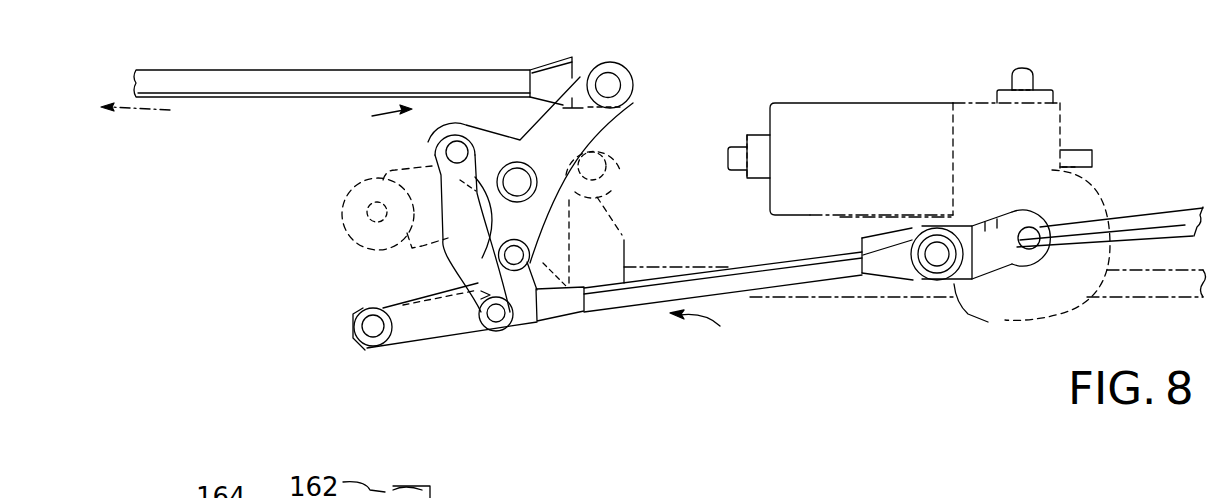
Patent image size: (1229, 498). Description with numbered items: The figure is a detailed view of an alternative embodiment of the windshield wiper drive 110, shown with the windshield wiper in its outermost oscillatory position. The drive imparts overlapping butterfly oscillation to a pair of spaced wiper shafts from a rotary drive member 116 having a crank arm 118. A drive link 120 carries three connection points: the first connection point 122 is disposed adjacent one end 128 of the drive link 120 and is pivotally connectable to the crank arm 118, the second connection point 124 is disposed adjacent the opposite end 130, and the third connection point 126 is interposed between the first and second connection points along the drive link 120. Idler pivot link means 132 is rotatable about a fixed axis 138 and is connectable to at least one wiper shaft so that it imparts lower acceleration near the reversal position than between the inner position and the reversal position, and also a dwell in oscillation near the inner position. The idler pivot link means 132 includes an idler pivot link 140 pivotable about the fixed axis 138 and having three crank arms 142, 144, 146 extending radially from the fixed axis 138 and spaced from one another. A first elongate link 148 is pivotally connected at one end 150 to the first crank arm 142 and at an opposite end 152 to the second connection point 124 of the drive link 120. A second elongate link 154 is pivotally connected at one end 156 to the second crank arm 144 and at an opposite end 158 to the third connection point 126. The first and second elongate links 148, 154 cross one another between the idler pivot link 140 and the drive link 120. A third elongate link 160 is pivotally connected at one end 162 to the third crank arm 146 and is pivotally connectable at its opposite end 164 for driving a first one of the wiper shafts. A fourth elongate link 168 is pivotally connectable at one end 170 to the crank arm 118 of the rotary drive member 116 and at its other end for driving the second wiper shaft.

The windshield wiper drive 110 is at (703, 338).
The rotary drive member 116 is at (897, 98).
The crank arm 118 is at (1022, 270).
The drive link 120 is at (738, 287).
The first connection point 122 is at (932, 283).
The second connection point 124 is at (347, 318).
The third connection point 126 is at (511, 328).
The one end of the drive link 128 is at (910, 232).
The opposite end of the drive link 130 is at (357, 348).
The idler pivot link means 132 is at (365, 120).
The fixed axis 138 is at (535, 170).
The idler pivot link 140 is at (530, 142).
The first crank arm 142 is at (535, 222).
The second crank arm 144 is at (452, 124).
The third crank arm 146 is at (631, 120).
The first elongate link 148 is at (426, 322).
The one end of the first elongate link 150 is at (538, 291).
The opposite end of the first elongate link 152 is at (375, 343).
The second elongate link 154 is at (450, 243).
The one end of the second elongate link 156 is at (446, 153).
The opposite end of the second elongate link 158 is at (480, 322).
The third elongate link 160 is at (247, 98).
The one end of the third elongate link 162 is at (612, 61).
The opposite end of the third elongate link 164 is at (170, 110).
The fourth elongate link 168 is at (1117, 218).
The one end of the fourth elongate link 170 is at (960, 226).